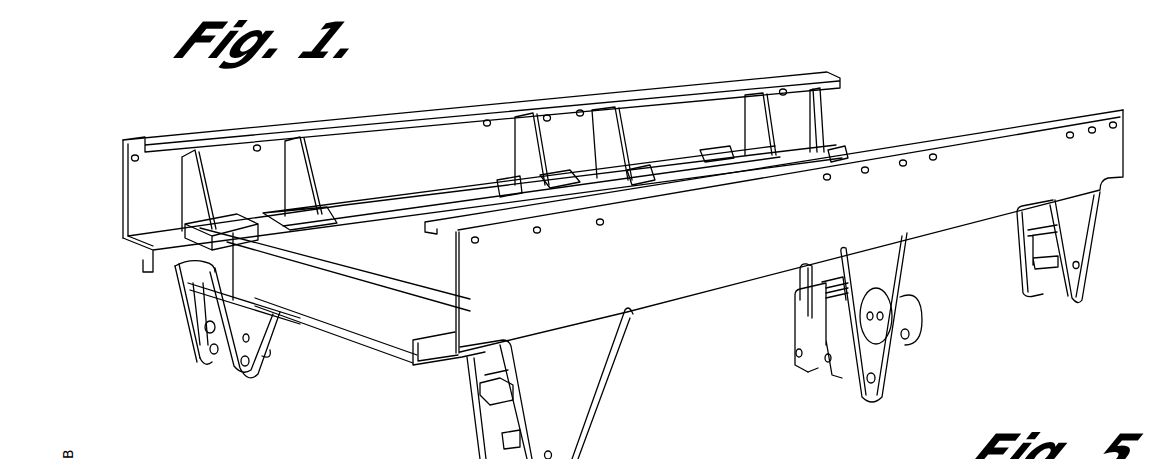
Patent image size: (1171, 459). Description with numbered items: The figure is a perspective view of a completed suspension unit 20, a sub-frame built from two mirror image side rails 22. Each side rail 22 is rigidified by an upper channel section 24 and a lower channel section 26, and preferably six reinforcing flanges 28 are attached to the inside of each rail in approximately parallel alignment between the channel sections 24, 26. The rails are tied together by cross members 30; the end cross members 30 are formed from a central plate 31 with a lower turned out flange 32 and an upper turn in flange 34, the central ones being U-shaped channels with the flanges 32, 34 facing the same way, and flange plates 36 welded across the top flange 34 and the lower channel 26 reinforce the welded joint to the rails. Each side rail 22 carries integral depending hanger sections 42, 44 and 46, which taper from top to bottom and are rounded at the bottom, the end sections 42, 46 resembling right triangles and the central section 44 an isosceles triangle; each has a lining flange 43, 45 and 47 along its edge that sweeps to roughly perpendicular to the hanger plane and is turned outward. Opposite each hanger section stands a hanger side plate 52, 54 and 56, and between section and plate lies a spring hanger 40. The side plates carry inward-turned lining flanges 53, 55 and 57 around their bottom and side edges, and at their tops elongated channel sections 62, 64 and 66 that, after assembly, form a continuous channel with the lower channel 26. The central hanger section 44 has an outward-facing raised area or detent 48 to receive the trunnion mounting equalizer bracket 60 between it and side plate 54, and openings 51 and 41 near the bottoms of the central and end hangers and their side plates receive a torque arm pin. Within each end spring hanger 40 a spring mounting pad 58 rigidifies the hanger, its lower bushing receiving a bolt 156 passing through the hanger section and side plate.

The suspension unit 20 is at (923, 113).
The side rail 22 is at (470, 131).
The upper rigidifying channel section 24 is at (794, 72).
The lower rigidifying channel section 26 is at (133, 243).
The reinforcing flange 28 is at (193, 183).
The cross member 30 is at (366, 325).
The central plate 31 is at (335, 308).
The lower turned out flange 32 is at (303, 313).
The upper turn in flange 34 is at (360, 274).
The flange plate 36 is at (276, 240).
The spring hanger 40 is at (639, 325).
The opening 41 is at (222, 357).
The end hanger section 42 is at (187, 305).
The lining flange 43 is at (616, 361).
The central hanger section 44 is at (903, 267).
The lining flange 45 is at (858, 378).
The end hanger section 46 is at (1082, 214).
The lining flange 47 is at (1098, 241).
The raised area or detent 48 is at (880, 292).
The opening 51 is at (877, 378).
The hanger side plate 52 is at (252, 322).
The lining flange 53 is at (268, 357).
The hanger side plate 54 is at (821, 281).
The lining flange 55 is at (817, 371).
The hanger side plate 56 is at (1027, 220).
The lining flange 57 is at (1017, 303).
The spring mounting pad 58 is at (204, 320).
The trunnion mounting equalizer bracket 60 is at (787, 343).
The elongated channel section 62 is at (335, 223).
The elongated channel section 64 is at (509, 181).
The elongated channel section 66 is at (743, 152).
The bolt 156 is at (548, 450).